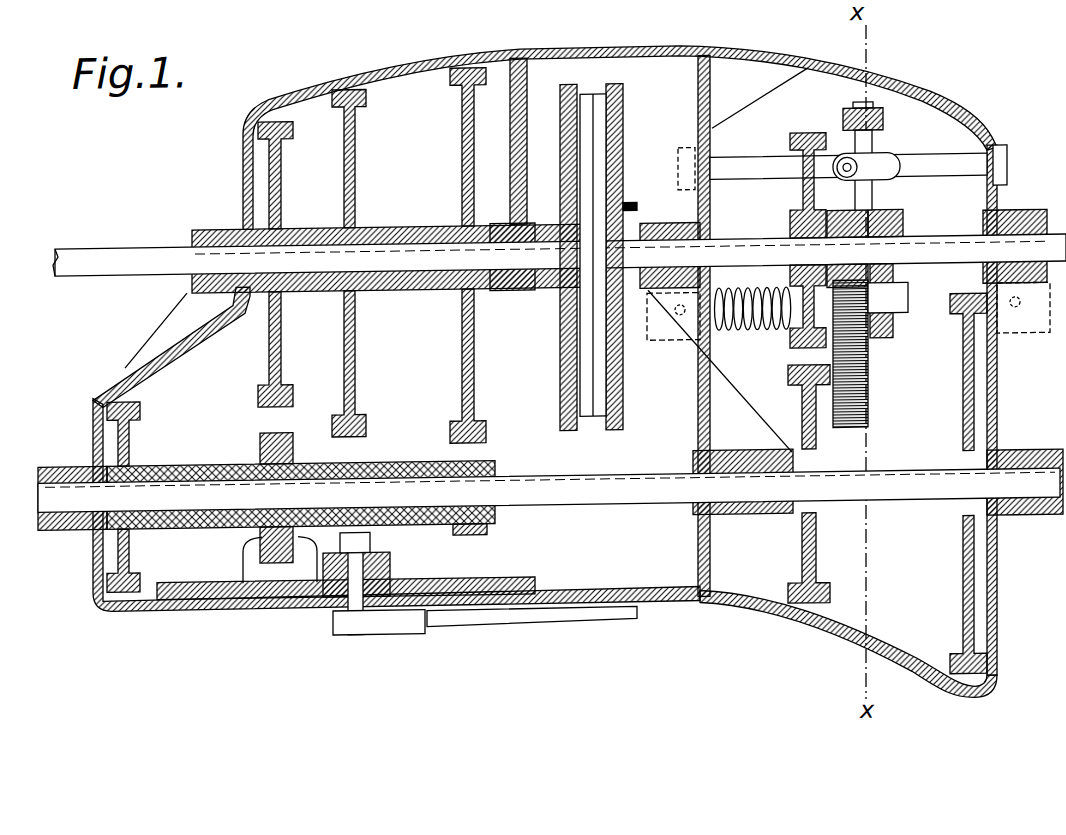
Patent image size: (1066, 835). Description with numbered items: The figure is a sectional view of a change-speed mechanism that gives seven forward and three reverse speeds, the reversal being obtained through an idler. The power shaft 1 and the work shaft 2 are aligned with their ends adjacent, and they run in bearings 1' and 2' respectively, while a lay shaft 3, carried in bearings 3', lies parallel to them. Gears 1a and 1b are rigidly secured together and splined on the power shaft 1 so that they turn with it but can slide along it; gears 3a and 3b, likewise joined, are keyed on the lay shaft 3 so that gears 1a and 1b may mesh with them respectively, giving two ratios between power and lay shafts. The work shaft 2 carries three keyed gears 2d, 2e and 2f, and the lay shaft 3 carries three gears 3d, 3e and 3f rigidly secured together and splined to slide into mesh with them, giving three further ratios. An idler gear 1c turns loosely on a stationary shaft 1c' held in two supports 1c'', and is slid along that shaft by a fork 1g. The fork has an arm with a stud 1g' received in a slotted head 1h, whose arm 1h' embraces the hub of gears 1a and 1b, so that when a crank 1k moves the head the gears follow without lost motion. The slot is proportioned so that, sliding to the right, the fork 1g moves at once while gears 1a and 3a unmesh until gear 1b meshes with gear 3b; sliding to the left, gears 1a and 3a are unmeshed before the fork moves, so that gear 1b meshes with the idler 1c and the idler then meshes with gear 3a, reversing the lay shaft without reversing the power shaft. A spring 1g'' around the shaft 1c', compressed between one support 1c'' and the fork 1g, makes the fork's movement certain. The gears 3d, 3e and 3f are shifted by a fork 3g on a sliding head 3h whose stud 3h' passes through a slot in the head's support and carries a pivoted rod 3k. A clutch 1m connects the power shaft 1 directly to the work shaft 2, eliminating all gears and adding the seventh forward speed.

The power shaft 1 is at (829, 221).
The bearings of power shaft 1' is at (844, 239).
The gear 1a is at (800, 149).
The gear 1b is at (903, 223).
The idler gear 1c is at (870, 353).
The stationary shaft 1c' is at (904, 287).
The supports of stationary shaft 1c'' is at (842, 368).
The fork 1g is at (855, 280).
The stud 1g' is at (882, 153).
The spring 1g'' is at (753, 333).
The slotted head 1h is at (895, 170).
The arm of slotted head 1h' is at (858, 179).
The crank 1k is at (883, 131).
The clutch 1m is at (620, 436).
The work shaft 2 is at (322, 293).
The bearings of work shaft 2' is at (383, 289).
The gear 2d is at (478, 424).
The gear 2e is at (363, 396).
The gear 2f is at (262, 370).
The lay shaft 3 is at (549, 513).
The bearings of lay shaft 3' is at (550, 500).
The gear 3a is at (797, 389).
The gear 3b is at (958, 401).
The gear 3d is at (480, 533).
The gear 3e is at (260, 447).
The gear 3f is at (137, 442).
The fork 3g is at (260, 557).
The sliding head 3h is at (346, 584).
The stud 3h' is at (379, 646).
The rod 3k is at (467, 633).